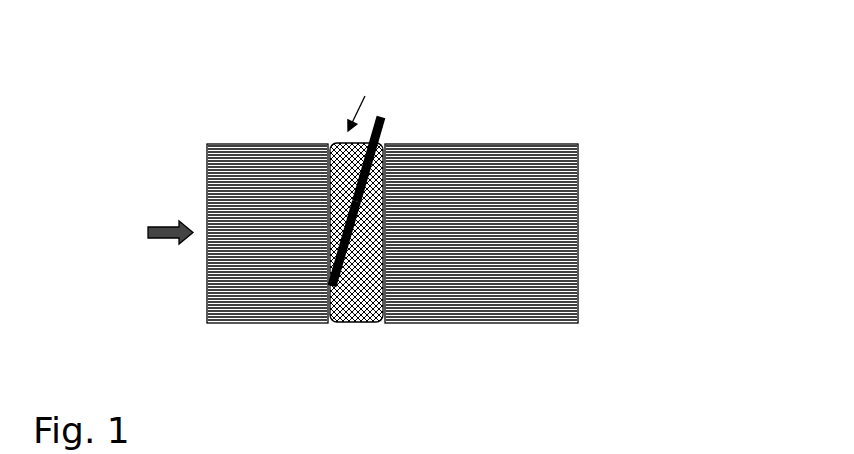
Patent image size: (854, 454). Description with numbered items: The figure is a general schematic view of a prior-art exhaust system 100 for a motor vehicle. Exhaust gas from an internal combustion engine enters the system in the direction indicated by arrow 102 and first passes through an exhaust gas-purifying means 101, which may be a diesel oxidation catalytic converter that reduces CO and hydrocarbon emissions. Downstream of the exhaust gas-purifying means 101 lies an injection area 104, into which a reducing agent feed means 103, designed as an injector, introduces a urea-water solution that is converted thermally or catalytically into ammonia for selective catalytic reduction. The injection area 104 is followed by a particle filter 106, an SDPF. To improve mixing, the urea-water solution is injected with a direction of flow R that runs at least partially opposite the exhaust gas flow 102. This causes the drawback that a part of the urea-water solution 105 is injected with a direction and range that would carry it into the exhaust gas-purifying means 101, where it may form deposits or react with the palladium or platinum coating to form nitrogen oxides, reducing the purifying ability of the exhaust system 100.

The exhaust system 100 is at (640, 83).
The exhaust gas-purifying means 101 is at (261, 143).
The exhaust gas flow 102 is at (164, 244).
The reducing agent feed means 103 is at (385, 126).
The injection area 104 is at (385, 340).
The part of the urea-water solution 105 is at (328, 284).
The particle filter 106 is at (562, 323).